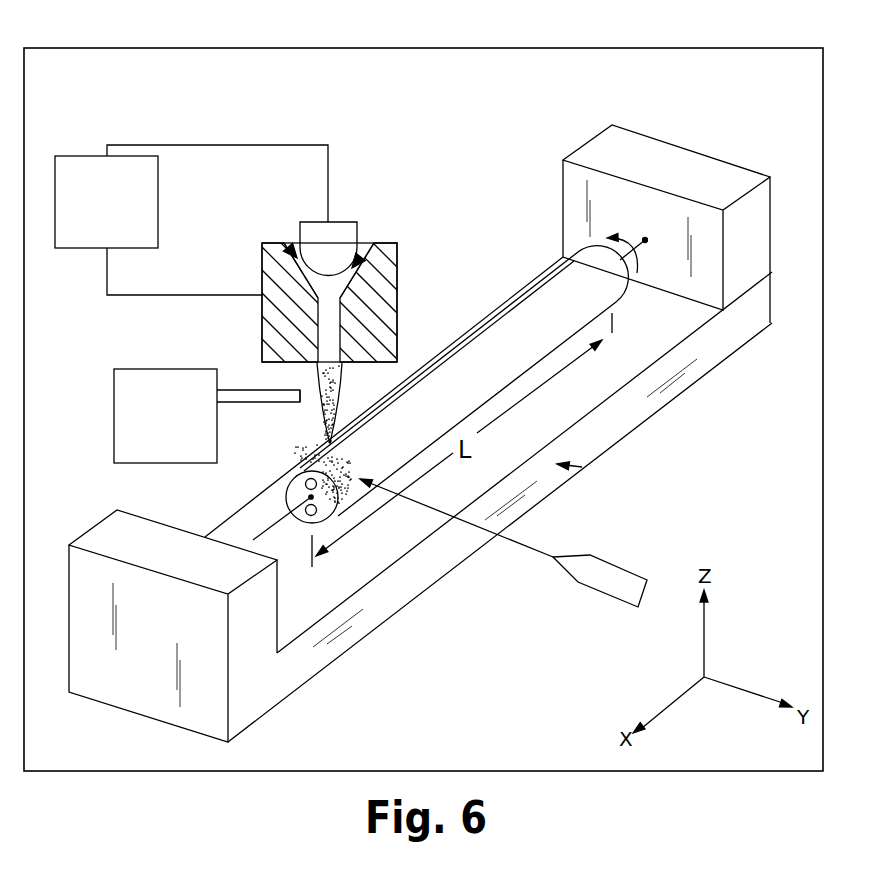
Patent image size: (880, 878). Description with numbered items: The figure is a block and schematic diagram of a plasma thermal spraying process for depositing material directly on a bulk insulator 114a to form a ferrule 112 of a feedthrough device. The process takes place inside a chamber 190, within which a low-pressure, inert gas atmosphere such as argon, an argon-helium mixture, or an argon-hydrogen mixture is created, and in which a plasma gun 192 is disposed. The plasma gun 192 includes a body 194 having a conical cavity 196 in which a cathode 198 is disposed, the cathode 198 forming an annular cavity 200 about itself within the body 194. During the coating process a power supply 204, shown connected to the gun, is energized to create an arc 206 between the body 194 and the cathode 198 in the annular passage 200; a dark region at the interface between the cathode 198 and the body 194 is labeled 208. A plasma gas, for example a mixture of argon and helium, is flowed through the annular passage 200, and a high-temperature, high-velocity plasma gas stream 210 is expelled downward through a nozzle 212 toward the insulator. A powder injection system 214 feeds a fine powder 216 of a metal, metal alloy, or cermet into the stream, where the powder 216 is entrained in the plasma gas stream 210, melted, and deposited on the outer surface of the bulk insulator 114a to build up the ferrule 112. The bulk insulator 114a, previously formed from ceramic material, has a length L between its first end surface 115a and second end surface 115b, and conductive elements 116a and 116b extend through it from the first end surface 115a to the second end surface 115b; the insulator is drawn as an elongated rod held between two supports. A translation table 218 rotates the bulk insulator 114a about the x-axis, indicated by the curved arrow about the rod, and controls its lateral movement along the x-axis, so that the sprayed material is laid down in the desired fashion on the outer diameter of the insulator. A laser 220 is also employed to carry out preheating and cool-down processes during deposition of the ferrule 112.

The chamber 190 is at (592, 48).
The plasma gun 192 is at (232, 331).
The body 194 is at (398, 308).
The conical cavity 196 is at (360, 258).
The cathode 198 is at (337, 222).
The annular cavity 200 is at (300, 270).
The power supply 204 is at (70, 250).
The arc 206 is at (383, 283).
The seal 208 is at (290, 250).
The plasma gas stream 210 is at (331, 398).
The nozzle 212 is at (316, 367).
The powder injection system 214 is at (114, 399).
The fine powder 216 is at (310, 400).
The translation table 218 is at (582, 467).
The laser 220 is at (594, 598).
The ferrule 112 is at (359, 475).
The bulk insulator 114a is at (535, 313).
The first end surface 115a is at (292, 494).
The second end surface 115b is at (626, 284).
The conductive element 116a is at (302, 478).
The conductive element 116b is at (310, 524).